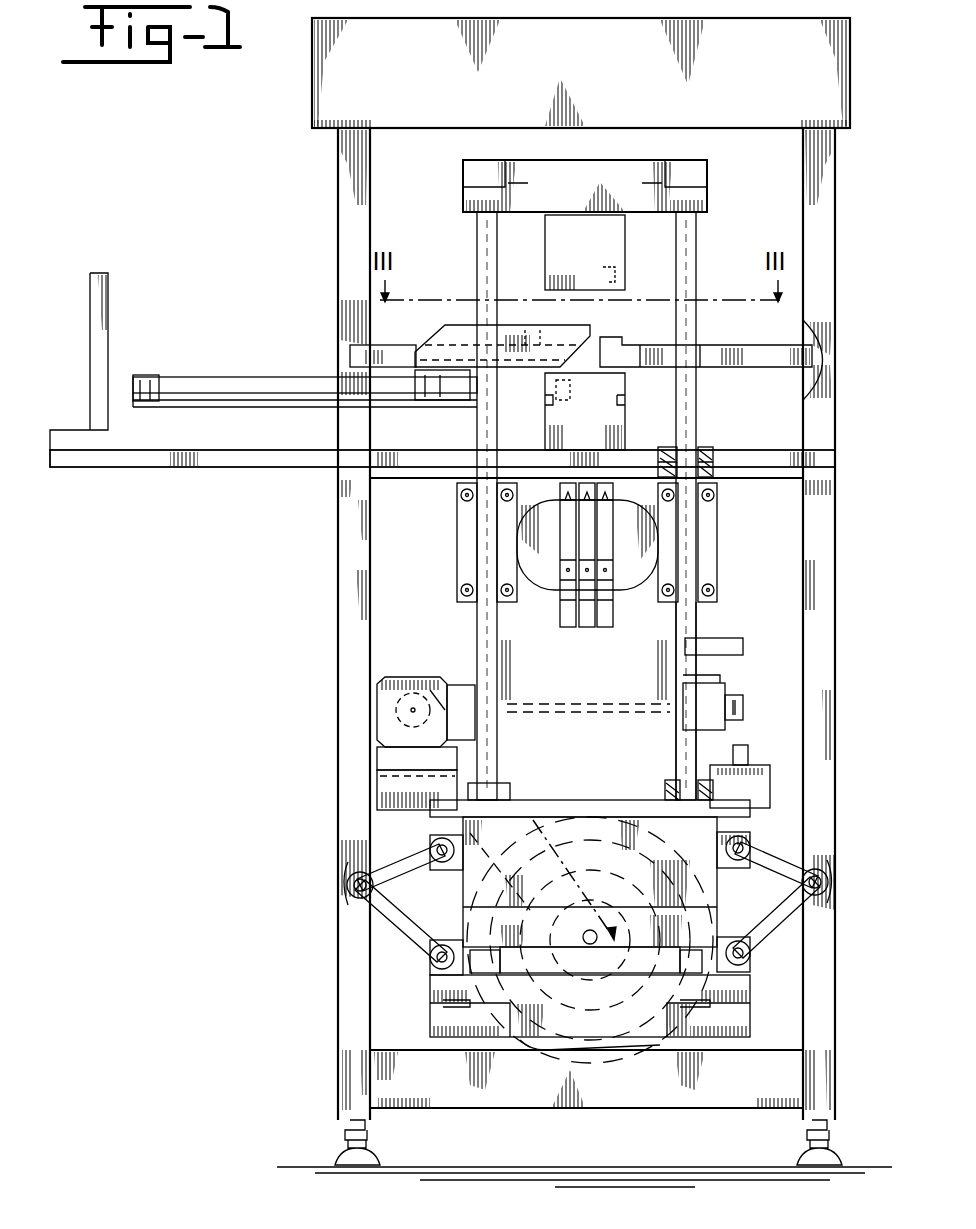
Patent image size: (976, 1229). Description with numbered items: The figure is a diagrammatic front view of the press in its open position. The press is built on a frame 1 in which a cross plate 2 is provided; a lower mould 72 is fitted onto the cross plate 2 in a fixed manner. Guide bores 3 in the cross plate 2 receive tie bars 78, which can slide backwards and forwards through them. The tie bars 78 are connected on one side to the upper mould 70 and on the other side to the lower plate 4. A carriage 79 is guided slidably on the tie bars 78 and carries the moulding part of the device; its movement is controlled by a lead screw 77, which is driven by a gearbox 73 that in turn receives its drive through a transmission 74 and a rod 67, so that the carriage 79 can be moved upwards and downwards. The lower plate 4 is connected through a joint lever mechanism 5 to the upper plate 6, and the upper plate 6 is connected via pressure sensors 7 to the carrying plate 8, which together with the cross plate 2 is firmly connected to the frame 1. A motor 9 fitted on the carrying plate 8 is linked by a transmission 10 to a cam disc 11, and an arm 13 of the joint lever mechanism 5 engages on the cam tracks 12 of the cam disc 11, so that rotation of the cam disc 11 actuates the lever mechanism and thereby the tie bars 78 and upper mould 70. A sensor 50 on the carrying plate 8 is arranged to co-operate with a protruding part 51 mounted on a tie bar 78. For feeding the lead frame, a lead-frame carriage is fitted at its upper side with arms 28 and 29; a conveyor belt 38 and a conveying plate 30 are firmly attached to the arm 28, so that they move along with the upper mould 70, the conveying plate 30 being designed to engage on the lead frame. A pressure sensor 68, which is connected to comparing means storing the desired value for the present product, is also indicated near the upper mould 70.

The frame 1 is at (353, 606).
The cross plate 2 is at (765, 470).
The guide bores 3 is at (707, 447).
The lower plate 4 is at (748, 1027).
The joint lever mechanism 5 is at (388, 933).
The upper plate 6 is at (812, 850).
The pressure sensors 7 is at (432, 820).
The carrying plate 8 is at (400, 790).
The motor 9 is at (383, 718).
The transmission 10 is at (400, 768).
The cam disc 11 is at (537, 1050).
The cam tracks 12 is at (630, 1050).
The arm 13 is at (425, 958).
The arm 28 is at (352, 355).
The arm 29 is at (738, 358).
The conveying plate 30 is at (462, 335).
The conveyor belt 38 is at (240, 386).
The sensor 50 is at (748, 753).
The protruding part 51 is at (745, 650).
The rod 67 is at (597, 714).
The pressure sensor 68 is at (612, 274).
The upper mould 70 is at (545, 262).
The lower mould 72 is at (625, 430).
The gearbox 73 is at (722, 692).
The transmission 74 is at (743, 706).
The lead screw 77 is at (700, 622).
The tie bars 78 is at (478, 240).
The carriage 79 is at (548, 570).